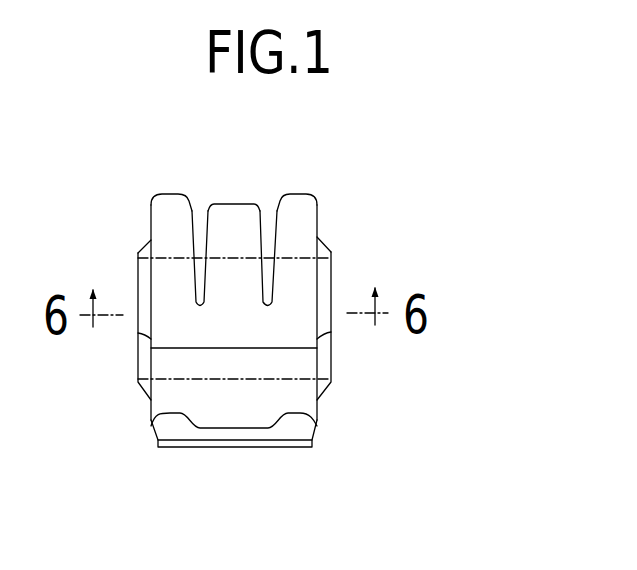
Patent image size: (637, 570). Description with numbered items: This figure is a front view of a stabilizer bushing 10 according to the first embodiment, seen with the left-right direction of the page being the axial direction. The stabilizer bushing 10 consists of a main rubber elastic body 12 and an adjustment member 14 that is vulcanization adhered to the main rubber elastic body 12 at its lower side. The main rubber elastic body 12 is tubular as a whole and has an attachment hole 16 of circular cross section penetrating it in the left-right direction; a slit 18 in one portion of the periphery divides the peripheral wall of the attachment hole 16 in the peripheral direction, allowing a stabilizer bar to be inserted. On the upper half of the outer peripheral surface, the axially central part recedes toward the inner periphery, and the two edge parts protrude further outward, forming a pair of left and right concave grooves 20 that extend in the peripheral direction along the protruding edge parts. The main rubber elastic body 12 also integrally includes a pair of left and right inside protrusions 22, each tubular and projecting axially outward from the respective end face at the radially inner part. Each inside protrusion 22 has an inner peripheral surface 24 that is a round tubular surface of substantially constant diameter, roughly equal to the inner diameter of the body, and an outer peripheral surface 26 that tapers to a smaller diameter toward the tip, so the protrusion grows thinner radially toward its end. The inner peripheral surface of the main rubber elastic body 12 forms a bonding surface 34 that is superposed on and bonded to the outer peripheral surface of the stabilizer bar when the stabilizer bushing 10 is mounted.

The stabilizer bushing 10 is at (440, 216).
The main rubber elastic body 12 is at (316, 192).
The adjustment member 14 is at (282, 450).
The attachment hole 16 is at (218, 380).
The slit 18 is at (183, 348).
The concave grooves 20 is at (200, 211).
The inside protrusions 22 is at (136, 241).
The inner peripheral surface 24 is at (137, 261).
The outer peripheral surface 26 is at (145, 287).
The bonding surface 34 is at (278, 375).